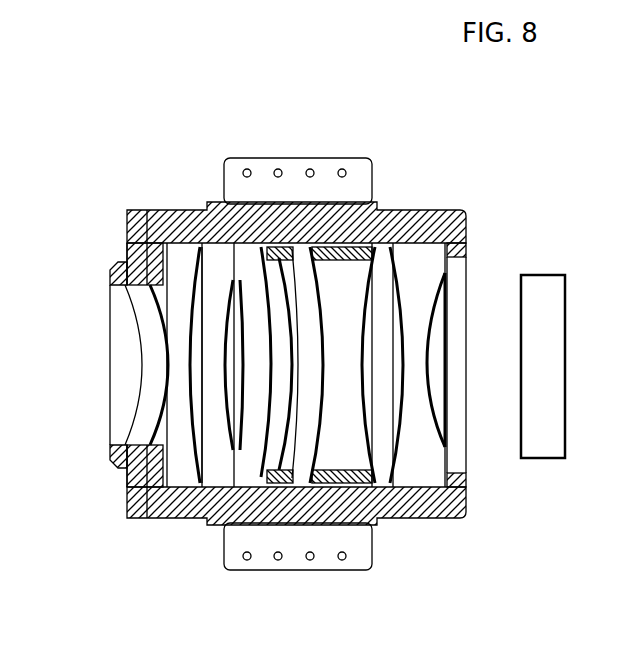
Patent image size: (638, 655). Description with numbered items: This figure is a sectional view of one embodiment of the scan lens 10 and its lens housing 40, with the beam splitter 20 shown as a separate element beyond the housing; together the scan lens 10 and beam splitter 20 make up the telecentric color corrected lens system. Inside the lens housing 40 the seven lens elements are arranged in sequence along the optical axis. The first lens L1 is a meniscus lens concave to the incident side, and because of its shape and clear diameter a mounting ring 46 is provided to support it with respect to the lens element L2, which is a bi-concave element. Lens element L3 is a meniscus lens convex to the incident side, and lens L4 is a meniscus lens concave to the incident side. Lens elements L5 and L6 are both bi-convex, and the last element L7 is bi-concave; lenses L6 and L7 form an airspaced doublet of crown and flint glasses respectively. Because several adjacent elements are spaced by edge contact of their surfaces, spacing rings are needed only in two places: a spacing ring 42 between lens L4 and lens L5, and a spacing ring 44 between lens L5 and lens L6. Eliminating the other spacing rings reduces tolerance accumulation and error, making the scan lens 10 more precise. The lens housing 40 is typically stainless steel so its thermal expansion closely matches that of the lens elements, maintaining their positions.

The scan lens 10 is at (262, 144).
The beam splitter 20 is at (540, 275).
The lens housing 40 is at (380, 208).
The spacing ring 42 is at (290, 482).
The spacing ring 44 is at (380, 522).
The mounting ring 46 is at (112, 462).
The lens L1 is at (142, 418).
The lens element L2 is at (182, 457).
The lens element L3 is at (217, 462).
The lens L4 is at (248, 466).
The lens element L5 is at (318, 462).
The lens element L6 is at (393, 478).
The lens element L7 is at (427, 452).